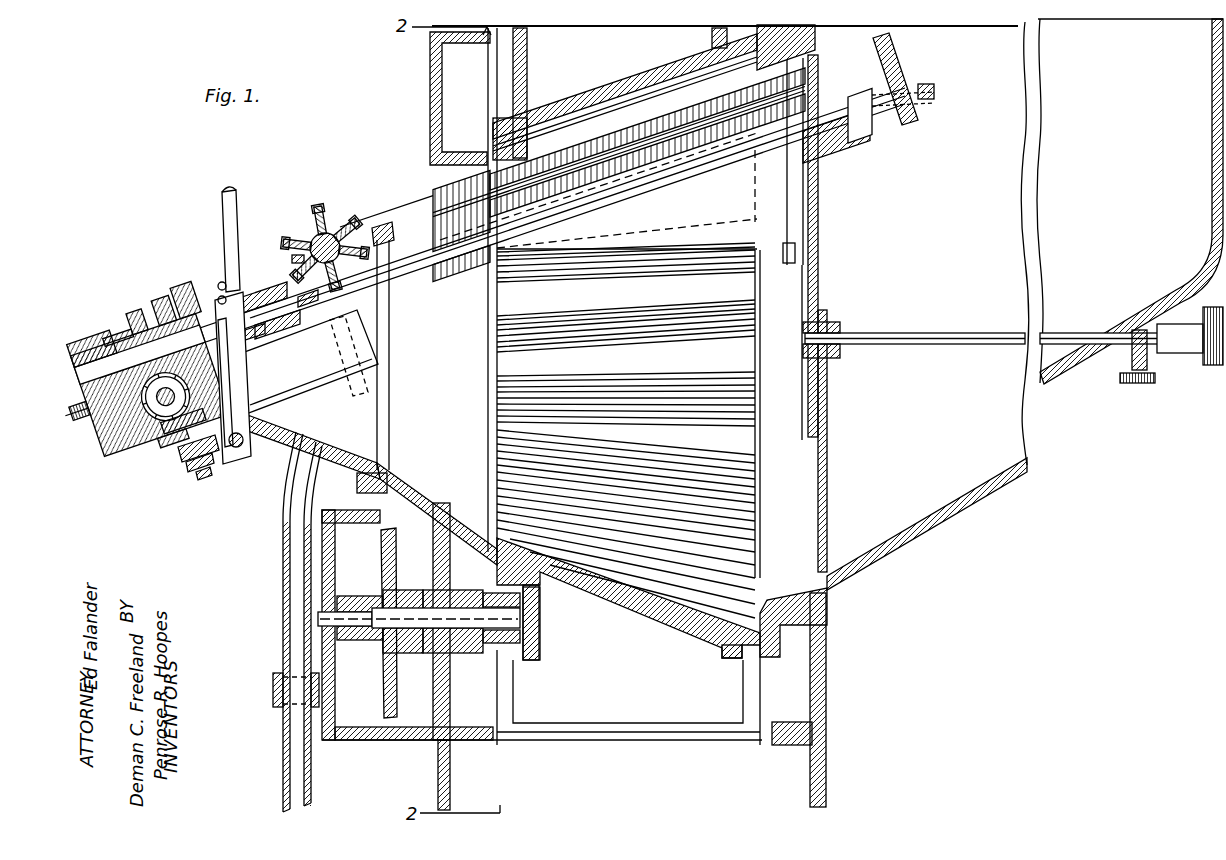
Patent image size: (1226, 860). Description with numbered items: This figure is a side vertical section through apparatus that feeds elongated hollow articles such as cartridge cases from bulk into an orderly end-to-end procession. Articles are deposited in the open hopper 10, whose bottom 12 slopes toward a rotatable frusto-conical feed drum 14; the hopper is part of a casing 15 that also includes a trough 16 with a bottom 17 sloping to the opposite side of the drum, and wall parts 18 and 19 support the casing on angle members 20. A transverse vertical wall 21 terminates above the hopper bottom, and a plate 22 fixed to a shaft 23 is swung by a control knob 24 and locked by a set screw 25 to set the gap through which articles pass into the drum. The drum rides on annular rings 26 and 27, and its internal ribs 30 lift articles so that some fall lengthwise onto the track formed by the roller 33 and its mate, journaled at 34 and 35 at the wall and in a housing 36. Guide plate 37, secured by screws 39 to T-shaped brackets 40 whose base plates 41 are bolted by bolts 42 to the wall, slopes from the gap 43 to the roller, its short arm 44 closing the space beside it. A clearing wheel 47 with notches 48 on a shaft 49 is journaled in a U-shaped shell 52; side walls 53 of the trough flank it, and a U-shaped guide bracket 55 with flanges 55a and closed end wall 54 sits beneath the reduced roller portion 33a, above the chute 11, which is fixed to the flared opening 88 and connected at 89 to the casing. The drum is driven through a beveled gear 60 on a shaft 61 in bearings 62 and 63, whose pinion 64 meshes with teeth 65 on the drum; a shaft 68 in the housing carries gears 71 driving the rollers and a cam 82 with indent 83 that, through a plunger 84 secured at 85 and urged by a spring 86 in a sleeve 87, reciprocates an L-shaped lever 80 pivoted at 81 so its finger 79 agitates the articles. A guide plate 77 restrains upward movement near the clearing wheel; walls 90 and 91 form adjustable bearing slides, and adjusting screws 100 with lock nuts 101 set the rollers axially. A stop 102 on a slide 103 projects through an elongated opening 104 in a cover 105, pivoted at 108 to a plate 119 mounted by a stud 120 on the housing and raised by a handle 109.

The hopper 10 is at (1095, 201).
The vertical tube or chute 11 is at (282, 612).
The bottom 12 is at (975, 486).
The feed drum 14 is at (626, 623).
The casing 15 is at (421, 84).
The funnel or trough 16 is at (464, 290).
The bottom 17 is at (458, 518).
The wall part 18 is at (826, 660).
The wall part 19 is at (452, 700).
The angle members 20 is at (452, 788).
The transverse vertical wall 21 is at (820, 252).
The plate 22 is at (828, 462).
The shaft 23 is at (930, 333).
The control knob 24 is at (1212, 368).
The set screw 25 is at (1140, 385).
The annular shoulder or ring 26 is at (532, 662).
The annular shoulder or ring 27 is at (733, 658).
The internal ribs 30 is at (597, 264).
The rod or roller 33 is at (440, 274).
The reduced portion of roller 33a is at (390, 322).
The journal 34 is at (884, 48).
The journal 35 is at (152, 304).
The housing 36 is at (98, 342).
The guide plate 37 is at (493, 131).
The screws 39 is at (648, 142).
The brackets 40 is at (705, 245).
The base plates 41 is at (786, 249).
The bolts 42 is at (788, 266).
The gap 43 is at (447, 212).
The short arm 44 is at (483, 264).
The clearing wheel 47 is at (300, 236).
The notches 48 is at (334, 214).
The shaft 49 is at (327, 235).
The U-shaped shell 52 is at (357, 482).
The side walls 53 is at (352, 380).
The closed end wall 54 is at (303, 383).
The U-shaped guide bracket 55 is at (332, 392).
The flanges 55a is at (390, 350).
The beveled gear 60 is at (386, 712).
The shaft 61 is at (368, 630).
The bearing 62 is at (353, 598).
The bearing 63 is at (456, 592).
The pinion 64 is at (490, 650).
The teeth 65 is at (527, 100).
The shaft 68 is at (150, 434).
The gears 71 is at (138, 410).
The guide plate 77 is at (296, 258).
The agitator or finger 79 is at (217, 300).
The L-shaped lever 80 is at (227, 460).
The pivot 81 is at (240, 447).
The cam 82 is at (115, 432).
The indent 83 is at (172, 442).
The plunger 84 is at (180, 432).
The adjustable securement 85 is at (182, 472).
The spring 86 is at (196, 477).
The hollow sleeve 87 is at (214, 480).
The opening 88 is at (300, 432).
The connection 89 is at (273, 688).
The wall 90 is at (210, 366).
The wall 91 is at (118, 342).
The adjusting screws 100 is at (925, 84).
The lock nuts 101 is at (922, 97).
The stop 102 is at (278, 332).
The slide 103 is at (262, 290).
The elongated opening 104 is at (262, 343).
The cover 105 is at (308, 312).
The pivot 108 is at (224, 228).
The handle 109 is at (230, 190).
The plate 119 is at (183, 292).
The stud 120 is at (165, 300).